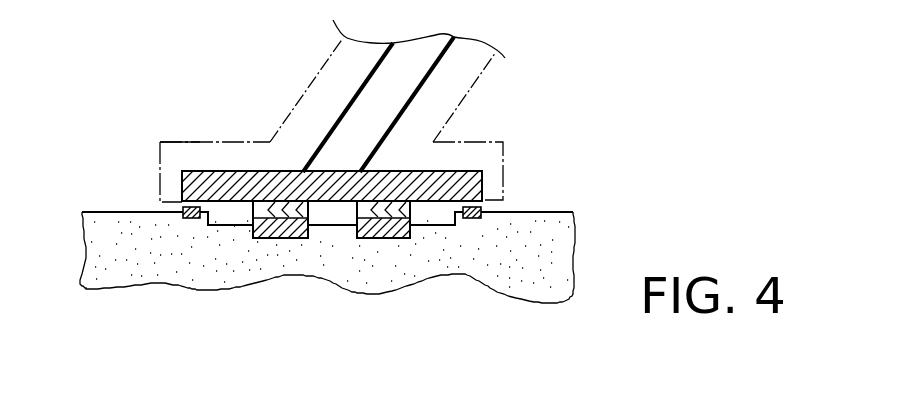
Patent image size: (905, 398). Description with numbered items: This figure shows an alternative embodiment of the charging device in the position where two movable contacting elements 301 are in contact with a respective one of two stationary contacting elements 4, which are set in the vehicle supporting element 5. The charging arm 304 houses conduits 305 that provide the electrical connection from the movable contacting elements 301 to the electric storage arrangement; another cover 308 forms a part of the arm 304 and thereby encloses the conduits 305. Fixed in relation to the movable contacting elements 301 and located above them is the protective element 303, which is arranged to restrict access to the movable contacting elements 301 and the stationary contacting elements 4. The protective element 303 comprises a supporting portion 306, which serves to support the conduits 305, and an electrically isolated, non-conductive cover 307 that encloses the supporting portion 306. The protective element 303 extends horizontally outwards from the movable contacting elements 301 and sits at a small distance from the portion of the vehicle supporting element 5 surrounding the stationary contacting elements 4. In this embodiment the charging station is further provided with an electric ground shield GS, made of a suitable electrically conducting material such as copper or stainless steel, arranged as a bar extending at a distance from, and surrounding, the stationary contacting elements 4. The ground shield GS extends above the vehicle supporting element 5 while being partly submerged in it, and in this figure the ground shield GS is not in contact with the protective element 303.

The stationary contacting element 4 is at (294, 227).
The vehicle supporting element 5 is at (550, 212).
The electric ground shield GS is at (189, 219).
The movable contacting element 301 is at (254, 210).
The protective element 303 is at (160, 153).
The charging arm 304 is at (287, 118).
The conduits 305 is at (365, 83).
The supporting portion 306 is at (182, 194).
The cover 307 is at (166, 142).
The cover 308 is at (463, 98).